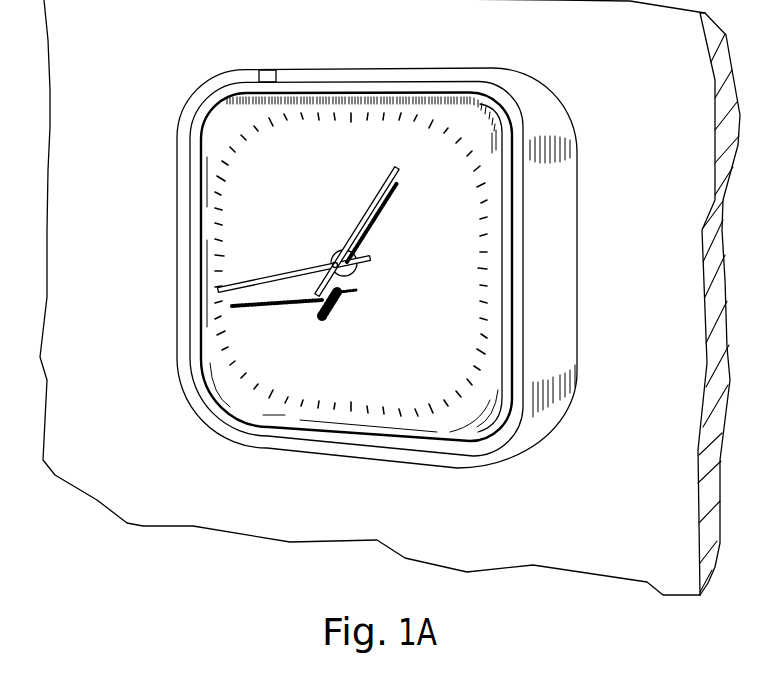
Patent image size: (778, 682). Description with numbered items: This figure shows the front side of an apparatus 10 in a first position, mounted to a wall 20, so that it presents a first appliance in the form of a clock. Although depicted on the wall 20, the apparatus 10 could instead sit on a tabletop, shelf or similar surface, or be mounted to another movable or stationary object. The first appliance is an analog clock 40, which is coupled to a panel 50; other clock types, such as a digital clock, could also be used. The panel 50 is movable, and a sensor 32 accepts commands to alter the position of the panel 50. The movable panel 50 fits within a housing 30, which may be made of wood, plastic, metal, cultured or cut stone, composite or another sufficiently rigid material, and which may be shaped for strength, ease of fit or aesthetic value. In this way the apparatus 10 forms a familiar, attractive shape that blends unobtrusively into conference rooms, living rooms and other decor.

The apparatus 10 is at (170, 68).
The wall 20 is at (643, 100).
The housing 30 is at (557, 215).
The sensor 32 is at (266, 70).
The analog clock 40 is at (255, 229).
The panel 50 is at (197, 343).